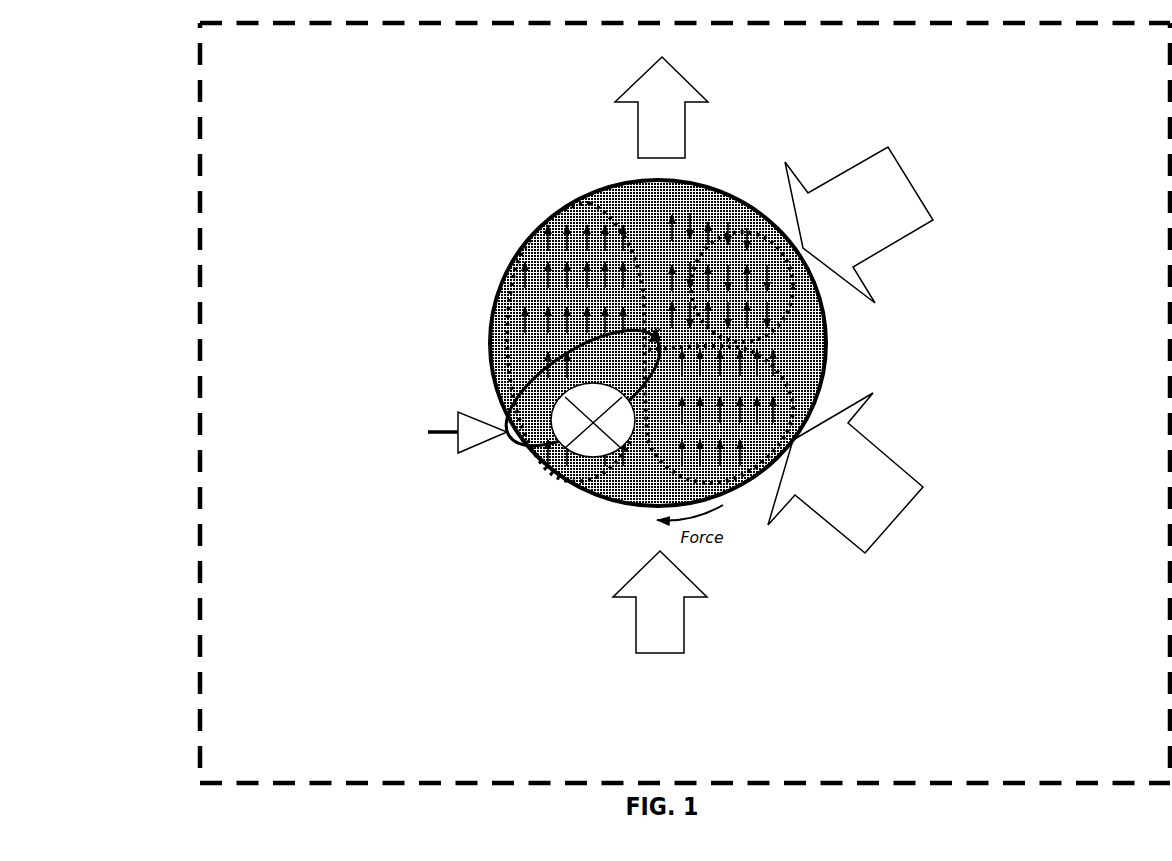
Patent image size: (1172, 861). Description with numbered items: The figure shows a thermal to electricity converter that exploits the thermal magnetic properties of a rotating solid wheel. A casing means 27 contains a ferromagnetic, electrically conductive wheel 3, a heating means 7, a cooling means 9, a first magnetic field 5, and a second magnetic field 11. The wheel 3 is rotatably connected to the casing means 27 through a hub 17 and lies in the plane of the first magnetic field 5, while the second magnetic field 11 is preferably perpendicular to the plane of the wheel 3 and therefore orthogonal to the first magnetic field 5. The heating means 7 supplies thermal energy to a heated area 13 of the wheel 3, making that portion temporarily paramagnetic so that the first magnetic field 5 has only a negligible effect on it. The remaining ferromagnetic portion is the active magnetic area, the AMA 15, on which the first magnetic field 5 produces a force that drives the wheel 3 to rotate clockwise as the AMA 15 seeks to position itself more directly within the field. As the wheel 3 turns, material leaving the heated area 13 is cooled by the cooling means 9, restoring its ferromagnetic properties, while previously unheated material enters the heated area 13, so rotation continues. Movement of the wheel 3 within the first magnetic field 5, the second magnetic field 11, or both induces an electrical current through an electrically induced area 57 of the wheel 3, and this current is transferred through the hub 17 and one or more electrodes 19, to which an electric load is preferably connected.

The Wheel 3 is at (643, 510).
The First Magnetic Field 5 is at (652, 124).
The Heating Means 7 is at (857, 231).
The Cooling Means 9 is at (836, 487).
The Second Magnetic Field 11 is at (583, 422).
The Heated Area 13 is at (787, 300).
The AMA (active magnetic area) 15 is at (510, 277).
The Hub 17 is at (656, 330).
The electrodes 19 is at (443, 438).
The Casing Means 27 is at (198, 182).
The Electrically Induced Area 57 is at (537, 443).